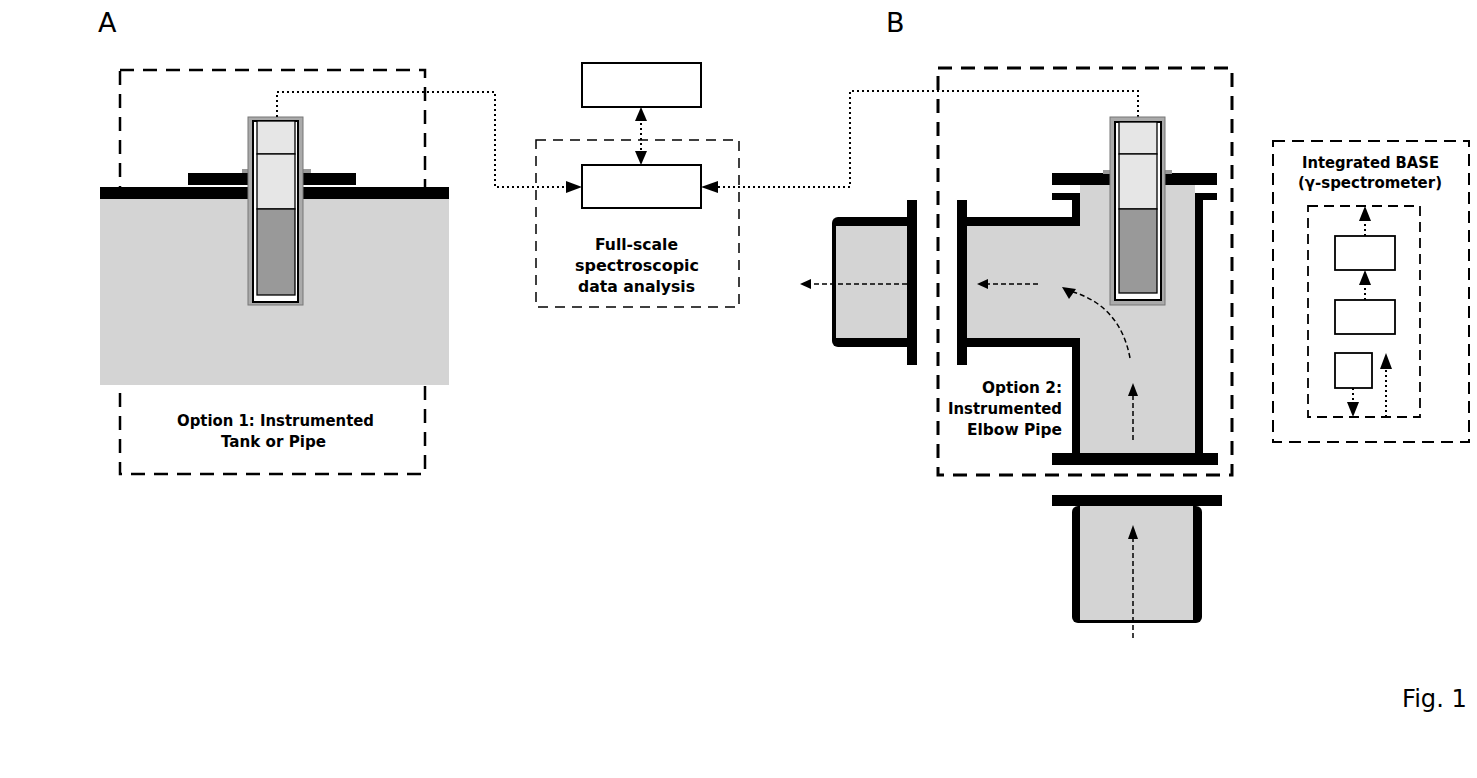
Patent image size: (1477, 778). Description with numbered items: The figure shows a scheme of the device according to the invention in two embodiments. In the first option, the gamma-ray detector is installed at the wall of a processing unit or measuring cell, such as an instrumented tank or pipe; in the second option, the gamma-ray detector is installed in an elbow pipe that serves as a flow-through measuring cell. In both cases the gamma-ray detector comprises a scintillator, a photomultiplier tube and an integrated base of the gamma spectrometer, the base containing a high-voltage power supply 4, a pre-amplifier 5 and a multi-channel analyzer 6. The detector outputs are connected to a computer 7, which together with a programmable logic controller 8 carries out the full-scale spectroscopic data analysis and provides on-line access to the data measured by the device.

The high-voltage power supply 4 is at (1353, 370).
The pre-amplifier 5 is at (1365, 317).
The multi-channel analyzer 6 is at (1365, 253).
The computer 7 is at (641, 186).
The programmable logic controller 8 is at (641, 85).